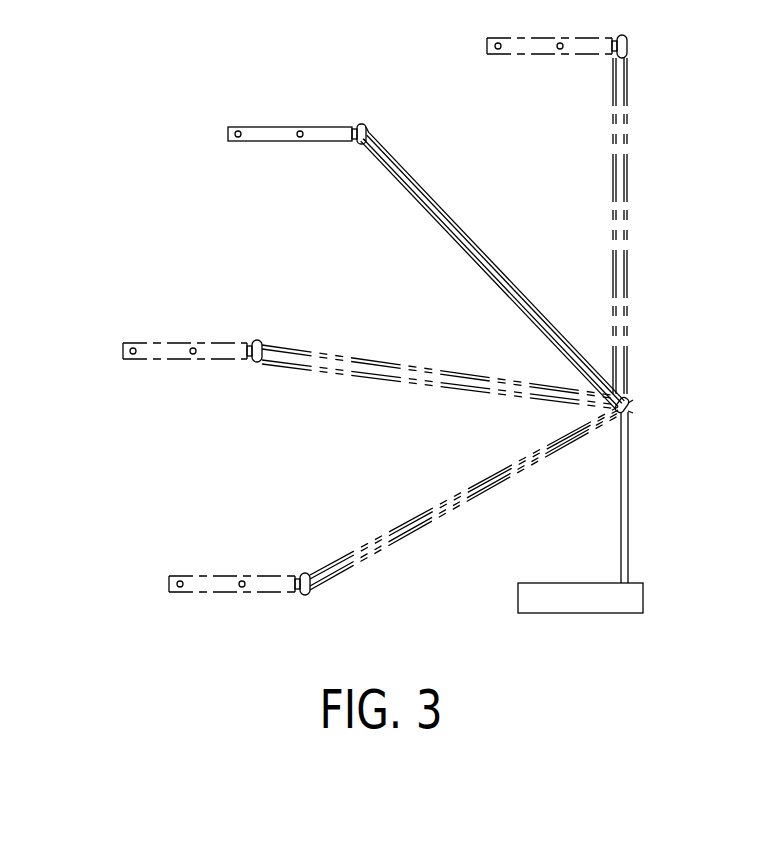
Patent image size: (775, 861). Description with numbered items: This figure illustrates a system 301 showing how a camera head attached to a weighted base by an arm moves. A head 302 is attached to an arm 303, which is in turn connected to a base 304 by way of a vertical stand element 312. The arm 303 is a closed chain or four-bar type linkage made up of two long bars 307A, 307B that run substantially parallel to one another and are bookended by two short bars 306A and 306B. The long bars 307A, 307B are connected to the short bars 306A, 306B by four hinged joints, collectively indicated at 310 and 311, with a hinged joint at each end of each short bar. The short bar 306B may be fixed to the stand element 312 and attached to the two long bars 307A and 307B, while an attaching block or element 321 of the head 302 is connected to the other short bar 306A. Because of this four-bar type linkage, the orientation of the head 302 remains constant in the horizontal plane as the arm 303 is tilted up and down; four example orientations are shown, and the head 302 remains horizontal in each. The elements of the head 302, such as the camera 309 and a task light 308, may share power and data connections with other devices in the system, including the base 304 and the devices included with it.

The system 301 is at (212, 84).
The head 302 is at (267, 118).
The arm 303 is at (494, 216).
The base 304 is at (650, 577).
The short bar 306A is at (367, 114).
The short bar 306B is at (637, 386).
The long bar 307A is at (477, 256).
The long bar 307B is at (438, 223).
The task light 308 is at (298, 150).
The camera 309 is at (230, 144).
The hinged joints 310 is at (366, 127).
The hinged joints 311 is at (633, 400).
The vertical stand element 312 is at (637, 470).
The attaching block or element 321 is at (355, 148).